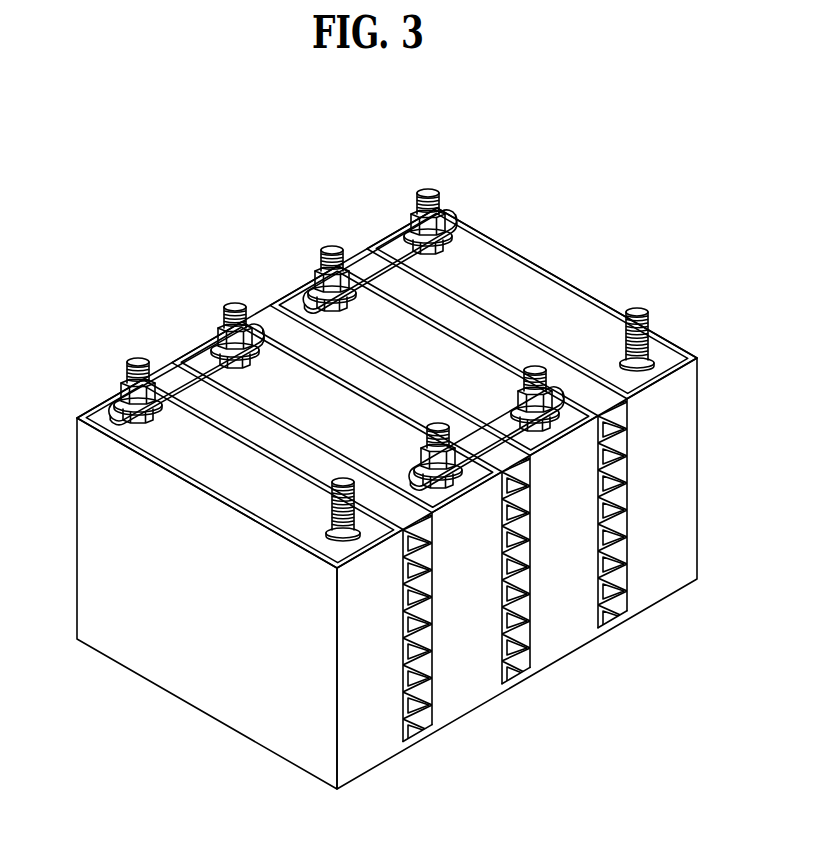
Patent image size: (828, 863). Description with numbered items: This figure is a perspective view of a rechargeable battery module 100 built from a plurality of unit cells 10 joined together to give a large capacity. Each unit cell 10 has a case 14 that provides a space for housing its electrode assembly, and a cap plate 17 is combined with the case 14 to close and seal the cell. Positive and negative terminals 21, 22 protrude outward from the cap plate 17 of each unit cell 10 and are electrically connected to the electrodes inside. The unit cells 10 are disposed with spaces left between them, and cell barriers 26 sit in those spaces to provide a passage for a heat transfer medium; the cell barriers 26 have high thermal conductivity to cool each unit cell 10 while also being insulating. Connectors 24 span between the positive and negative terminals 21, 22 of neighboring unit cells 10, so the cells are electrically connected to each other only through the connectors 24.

The rechargeable battery module 100 is at (352, 130).
The unit cell 10 is at (355, 521).
The case 14 is at (137, 663).
The cap plate 17 is at (166, 456).
The positive terminal 21 is at (140, 363).
The negative terminal 22 is at (236, 306).
The connector 24 is at (186, 344).
The cell barrier 26 is at (423, 738).